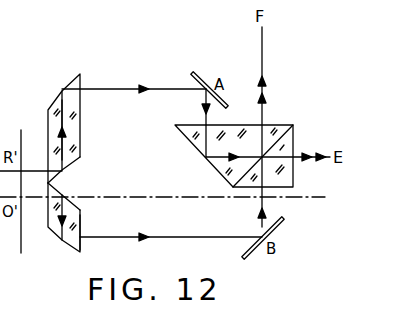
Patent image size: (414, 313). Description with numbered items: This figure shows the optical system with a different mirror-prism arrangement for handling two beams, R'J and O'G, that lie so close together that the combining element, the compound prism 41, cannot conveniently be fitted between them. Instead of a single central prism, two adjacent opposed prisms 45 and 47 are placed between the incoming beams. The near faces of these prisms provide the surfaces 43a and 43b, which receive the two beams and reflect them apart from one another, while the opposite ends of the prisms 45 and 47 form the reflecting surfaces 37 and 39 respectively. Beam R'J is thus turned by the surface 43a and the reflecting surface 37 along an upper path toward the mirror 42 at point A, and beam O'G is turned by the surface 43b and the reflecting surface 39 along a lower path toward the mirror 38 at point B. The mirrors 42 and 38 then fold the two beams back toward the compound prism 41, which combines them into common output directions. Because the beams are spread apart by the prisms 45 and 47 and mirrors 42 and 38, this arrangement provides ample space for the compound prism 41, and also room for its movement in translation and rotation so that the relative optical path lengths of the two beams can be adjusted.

The reflecting surface 37 is at (57, 128).
The prism 45 is at (75, 107).
The surface 43a is at (64, 169).
The surface 43b is at (50, 183).
The reflecting surface 39 is at (49, 229).
The prism 47 is at (80, 224).
The mirror 42 is at (207, 73).
The compound prism 41 is at (288, 115).
The mirror 38 is at (273, 220).